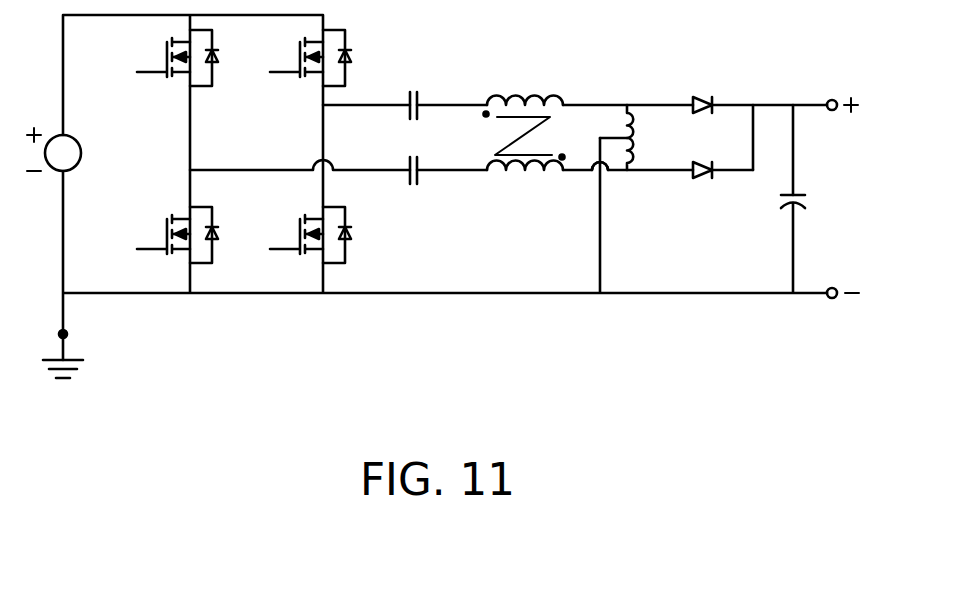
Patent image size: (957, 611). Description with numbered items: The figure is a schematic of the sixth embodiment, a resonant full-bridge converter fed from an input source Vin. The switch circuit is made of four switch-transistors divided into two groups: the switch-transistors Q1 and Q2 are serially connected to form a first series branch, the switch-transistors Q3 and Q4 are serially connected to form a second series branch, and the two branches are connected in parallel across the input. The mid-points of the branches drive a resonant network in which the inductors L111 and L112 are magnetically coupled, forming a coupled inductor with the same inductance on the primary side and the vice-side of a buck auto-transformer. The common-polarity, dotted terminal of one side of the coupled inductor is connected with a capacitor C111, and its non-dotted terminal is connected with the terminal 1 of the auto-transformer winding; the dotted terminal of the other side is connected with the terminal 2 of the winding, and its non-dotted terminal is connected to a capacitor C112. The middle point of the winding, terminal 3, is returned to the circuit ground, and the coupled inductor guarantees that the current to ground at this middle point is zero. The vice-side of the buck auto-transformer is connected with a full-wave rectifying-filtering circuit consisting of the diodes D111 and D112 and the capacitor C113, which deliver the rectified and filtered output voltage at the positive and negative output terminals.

The input voltage source Vin is at (74, 149).
The switch-transistor Q1 is at (192, 58).
The switch-transistor Q2 is at (192, 235).
The switch-transistor Q3 is at (326, 58).
The switch-transistor Q4 is at (327, 235).
The capacitor C111 is at (432, 91).
The capacitor C112 is at (435, 188).
The inductor L111 is at (524, 109).
The inductor L112 is at (526, 184).
The terminal of the winding 1 is at (627, 105).
The terminal of the winding 2 is at (627, 171).
The middle point terminal 3 is at (614, 137).
The diode D111 is at (710, 88).
The diode D112 is at (711, 191).
The capacitor C113 is at (823, 204).